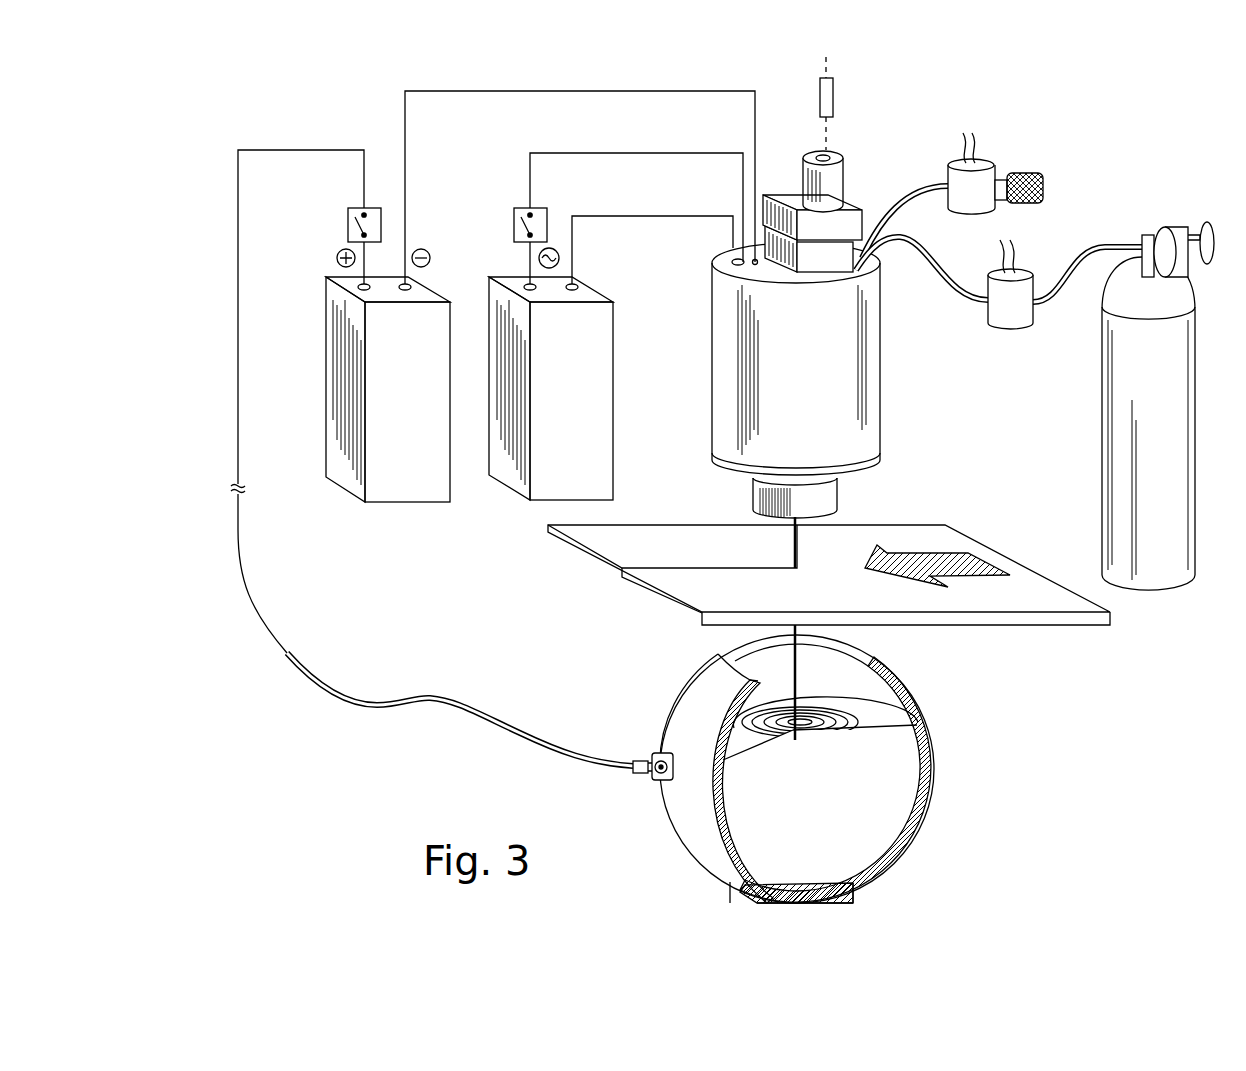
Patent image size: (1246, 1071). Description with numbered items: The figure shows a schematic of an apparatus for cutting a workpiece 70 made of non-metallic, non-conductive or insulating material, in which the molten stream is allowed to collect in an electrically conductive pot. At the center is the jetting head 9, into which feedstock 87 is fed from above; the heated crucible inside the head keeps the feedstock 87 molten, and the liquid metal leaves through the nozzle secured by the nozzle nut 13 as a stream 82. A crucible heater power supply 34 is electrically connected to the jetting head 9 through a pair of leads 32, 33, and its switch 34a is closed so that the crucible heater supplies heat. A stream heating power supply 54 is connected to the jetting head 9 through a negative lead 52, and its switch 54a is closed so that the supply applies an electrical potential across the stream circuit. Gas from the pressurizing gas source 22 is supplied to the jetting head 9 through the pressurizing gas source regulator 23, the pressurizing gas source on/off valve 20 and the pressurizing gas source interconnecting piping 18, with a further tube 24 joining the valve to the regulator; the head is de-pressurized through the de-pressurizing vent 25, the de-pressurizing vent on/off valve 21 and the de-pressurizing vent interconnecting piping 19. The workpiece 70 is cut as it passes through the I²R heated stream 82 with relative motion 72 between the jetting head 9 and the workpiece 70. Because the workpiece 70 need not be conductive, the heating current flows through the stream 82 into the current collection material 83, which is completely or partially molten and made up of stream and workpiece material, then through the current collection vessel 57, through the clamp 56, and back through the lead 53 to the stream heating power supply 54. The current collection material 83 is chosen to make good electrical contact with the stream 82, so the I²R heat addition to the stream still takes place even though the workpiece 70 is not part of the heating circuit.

The jetting head 9 is at (876, 368).
The nozzle nut 13 is at (818, 490).
The pressurizing gas source interconnecting piping 18 is at (945, 292).
The de-pressurizing vent interconnecting piping 19 is at (903, 208).
The pressurizing gas source on/off valve 20 is at (1018, 272).
The de-pressurizing vent on/off valve 21 is at (983, 160).
The pressurizing gas source 22 is at (1182, 360).
The pressurizing gas source regulator 23 is at (1190, 237).
The tube 24 is at (1070, 303).
The de-pressurizing vent 25 is at (1043, 185).
The lead 32 is at (617, 216).
The lead 33 is at (617, 153).
The crucible heater power supply 34 is at (562, 413).
The switch 34a is at (514, 224).
The negative lead 52 is at (618, 91).
The positive lead 53 is at (303, 150).
The stream heating power supply 54 is at (397, 413).
The switch 54a is at (348, 224).
The clamp 56 is at (650, 756).
The current collection vessel 57 is at (676, 712).
The workpiece 70 is at (916, 525).
The relative motion 72 is at (963, 576).
The stream 82 is at (798, 540).
The current collection material 83 is at (839, 801).
The feedstock 87 is at (835, 100).